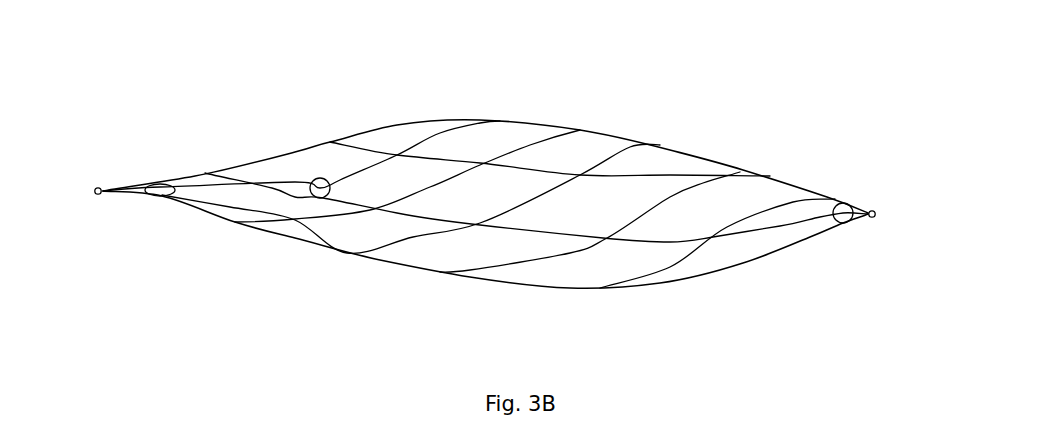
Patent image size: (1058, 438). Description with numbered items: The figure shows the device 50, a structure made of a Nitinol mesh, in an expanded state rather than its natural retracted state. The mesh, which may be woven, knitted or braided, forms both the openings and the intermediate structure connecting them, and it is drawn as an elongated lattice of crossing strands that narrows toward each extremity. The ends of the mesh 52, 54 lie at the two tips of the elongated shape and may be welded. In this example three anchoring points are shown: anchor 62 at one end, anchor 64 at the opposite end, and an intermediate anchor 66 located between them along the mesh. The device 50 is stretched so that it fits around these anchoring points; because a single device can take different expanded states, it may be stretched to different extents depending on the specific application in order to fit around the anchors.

The device 50 is at (622, 118).
The end of the mesh 52 is at (98, 187).
The end of the mesh 54 is at (872, 210).
The anchor 62 is at (160, 196).
The anchor 64 is at (843, 223).
The intermediate anchor 66 is at (317, 198).